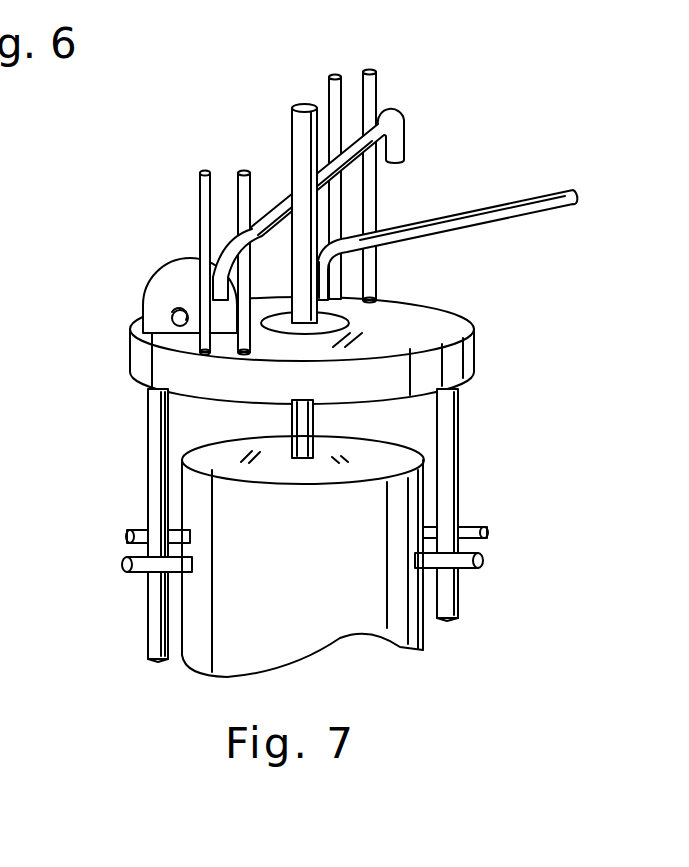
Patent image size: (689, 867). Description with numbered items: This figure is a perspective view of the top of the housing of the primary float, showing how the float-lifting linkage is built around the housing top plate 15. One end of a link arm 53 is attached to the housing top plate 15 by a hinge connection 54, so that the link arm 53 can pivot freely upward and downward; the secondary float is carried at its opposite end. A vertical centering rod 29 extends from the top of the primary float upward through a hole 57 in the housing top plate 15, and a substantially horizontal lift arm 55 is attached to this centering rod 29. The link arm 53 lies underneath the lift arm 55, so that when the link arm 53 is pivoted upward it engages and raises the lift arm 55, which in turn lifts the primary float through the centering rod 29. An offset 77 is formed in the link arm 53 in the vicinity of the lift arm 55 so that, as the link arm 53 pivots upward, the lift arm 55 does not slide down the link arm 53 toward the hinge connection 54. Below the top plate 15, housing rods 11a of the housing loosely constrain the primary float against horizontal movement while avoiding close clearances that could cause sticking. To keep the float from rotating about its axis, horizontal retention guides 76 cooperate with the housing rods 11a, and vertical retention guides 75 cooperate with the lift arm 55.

The housing top plate 15 is at (443, 320).
The vertical centering rod 29 is at (307, 143).
The link arm 53 is at (487, 213).
The hinge connection 54 is at (168, 314).
The lift arm 55 is at (392, 123).
The hole 57 is at (320, 317).
The vertical retention guides 75 is at (368, 74).
The horizontal retention guides 76 is at (126, 560).
The offset 77 is at (327, 292).
The housing rods 11a is at (152, 426).